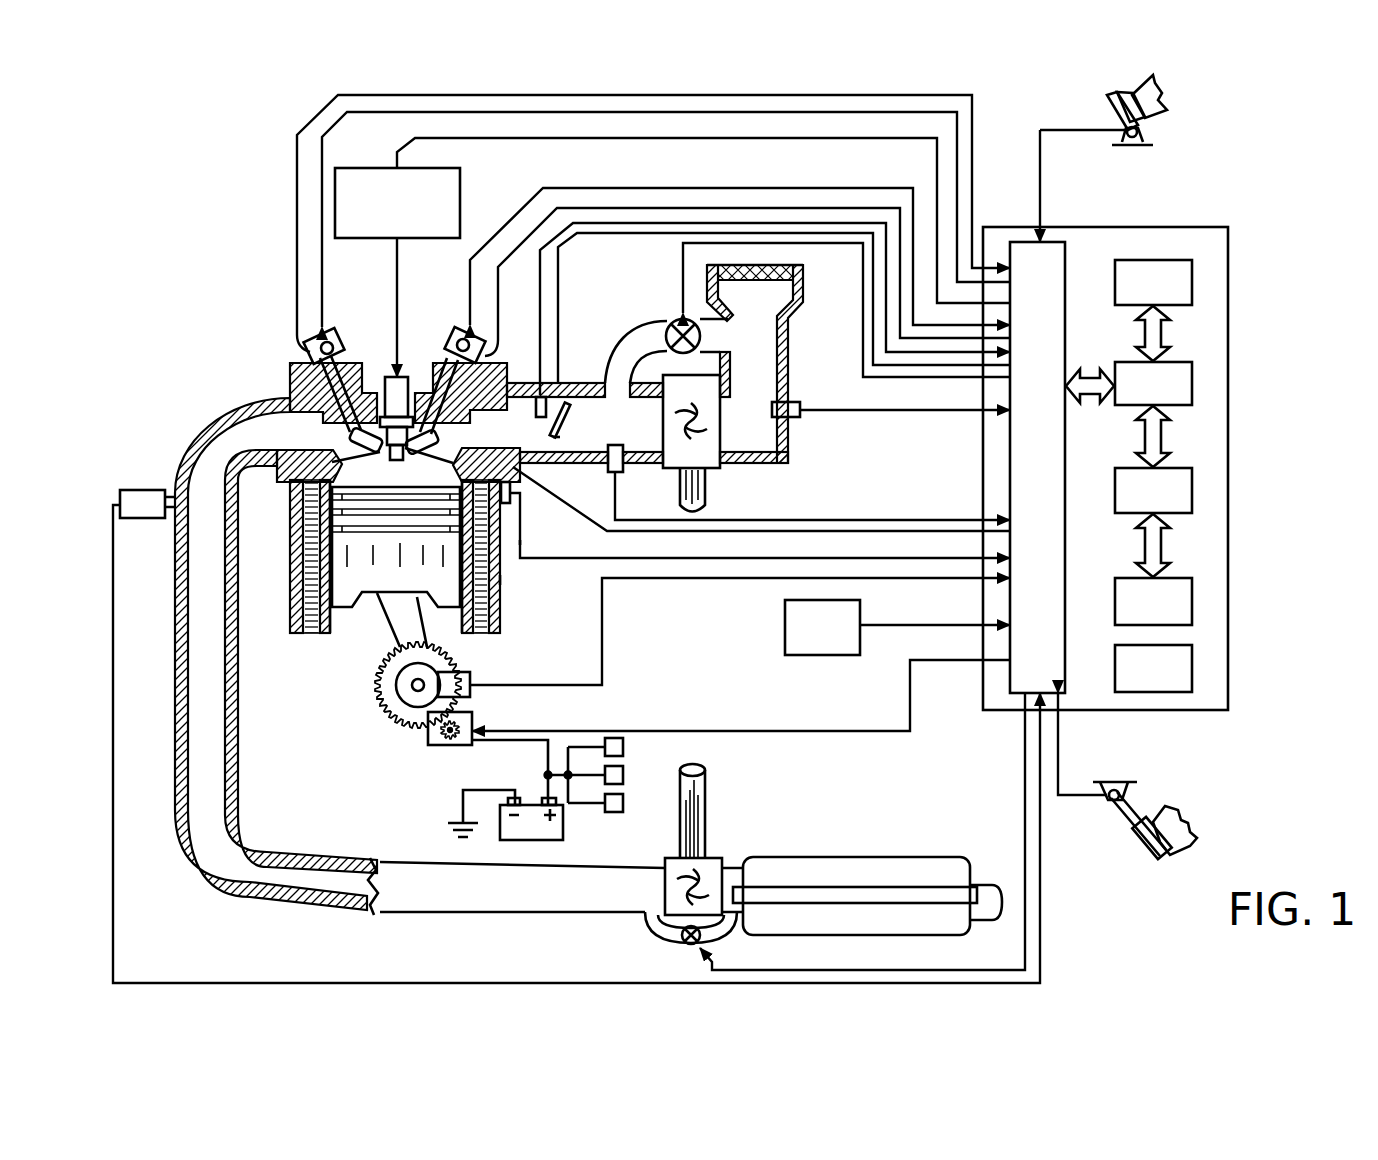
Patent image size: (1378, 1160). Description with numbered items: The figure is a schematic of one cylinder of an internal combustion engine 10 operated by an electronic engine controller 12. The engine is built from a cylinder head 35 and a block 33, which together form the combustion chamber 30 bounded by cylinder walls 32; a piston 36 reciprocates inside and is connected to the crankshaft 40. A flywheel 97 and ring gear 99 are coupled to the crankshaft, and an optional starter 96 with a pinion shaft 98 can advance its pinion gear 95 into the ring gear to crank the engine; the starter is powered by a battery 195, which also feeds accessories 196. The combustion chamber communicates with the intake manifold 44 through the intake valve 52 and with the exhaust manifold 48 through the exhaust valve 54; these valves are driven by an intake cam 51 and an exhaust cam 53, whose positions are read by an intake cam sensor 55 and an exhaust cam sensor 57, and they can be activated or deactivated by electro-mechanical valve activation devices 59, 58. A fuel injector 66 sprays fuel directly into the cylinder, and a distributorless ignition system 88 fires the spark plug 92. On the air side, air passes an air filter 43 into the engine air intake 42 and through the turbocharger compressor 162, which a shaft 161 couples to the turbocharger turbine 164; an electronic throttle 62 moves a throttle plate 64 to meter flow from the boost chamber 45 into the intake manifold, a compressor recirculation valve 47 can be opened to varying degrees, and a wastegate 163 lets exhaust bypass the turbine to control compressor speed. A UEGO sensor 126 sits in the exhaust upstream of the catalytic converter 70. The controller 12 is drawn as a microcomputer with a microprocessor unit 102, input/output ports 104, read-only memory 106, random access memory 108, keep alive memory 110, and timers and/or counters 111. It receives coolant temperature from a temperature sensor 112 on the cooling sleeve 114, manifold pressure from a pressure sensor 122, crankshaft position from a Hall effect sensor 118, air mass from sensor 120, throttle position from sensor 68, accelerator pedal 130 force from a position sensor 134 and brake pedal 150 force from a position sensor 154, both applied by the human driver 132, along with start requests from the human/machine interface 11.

The internal combustion engine 10 is at (220, 320).
The human/machine interface 11 is at (822, 627).
The electronic engine controller 12 is at (1215, 228).
The combustion chamber 30 is at (300, 572).
The cylinder walls 32 is at (333, 628).
The block 33 is at (284, 513).
The cylinder head 35 is at (286, 362).
The piston 36 is at (378, 577).
The crankshaft 40 is at (410, 708).
The engine air intake 42 is at (622, 283).
The air filter 43 is at (778, 284).
The intake manifold 44 is at (500, 438).
The boost chamber 45 is at (611, 438).
The compressor recirculation valve 47 is at (670, 320).
The exhaust manifold 48 is at (243, 443).
The intake cam 51 is at (450, 327).
The intake valve 52 is at (443, 428).
The exhaust cam 53 is at (333, 340).
The exhaust valve 54 is at (305, 426).
The intake cam sensor 55 is at (495, 355).
The exhaust cam sensor 57 is at (308, 347).
The valve activation device 58 is at (343, 348).
The valve activation device 59 is at (455, 352).
The electronic throttle 62 is at (569, 417).
The throttle plate 64 is at (556, 437).
The fuel injector 66 is at (511, 500).
The throttle position sensor 68 is at (522, 384).
The catalytic converter 70 is at (785, 857).
The distributorless ignition system 88 is at (352, 168).
The spark plug 92 is at (410, 372).
The pinion gear 95 is at (462, 750).
The starter 96 is at (467, 745).
The flywheel 97 is at (383, 693).
The pinion shaft 98 is at (443, 747).
The ring gear 99 is at (417, 727).
The microprocessor unit 102 is at (1193, 383).
The input/output ports 104 is at (1067, 258).
The read-only memory 106 is at (1193, 278).
The random access memory 108 is at (1193, 492).
The keep alive memory 110 is at (1193, 600).
The timers and/or counters 111 is at (1193, 668).
The temperature sensor 112 is at (540, 543).
The cooling sleeve 114 is at (497, 580).
The Hall effect sensor 118 is at (470, 675).
The air mass sensor 120 is at (800, 405).
The pressure sensor 122 is at (607, 468).
The UEGO sensor 126 is at (120, 493).
The accelerator pedal 130 is at (1122, 128).
The human driver 132 is at (1163, 93).
The position sensor 134 is at (1140, 133).
The brake pedal 150 is at (1145, 852).
The position sensor 154 is at (1108, 790).
The shaft 161 is at (680, 487).
The turbocharger compressor 162 is at (705, 455).
The wastegate 163 is at (686, 945).
The turbocharger turbine 164 is at (670, 858).
The battery 195 is at (507, 826).
The accessories 196 is at (620, 822).